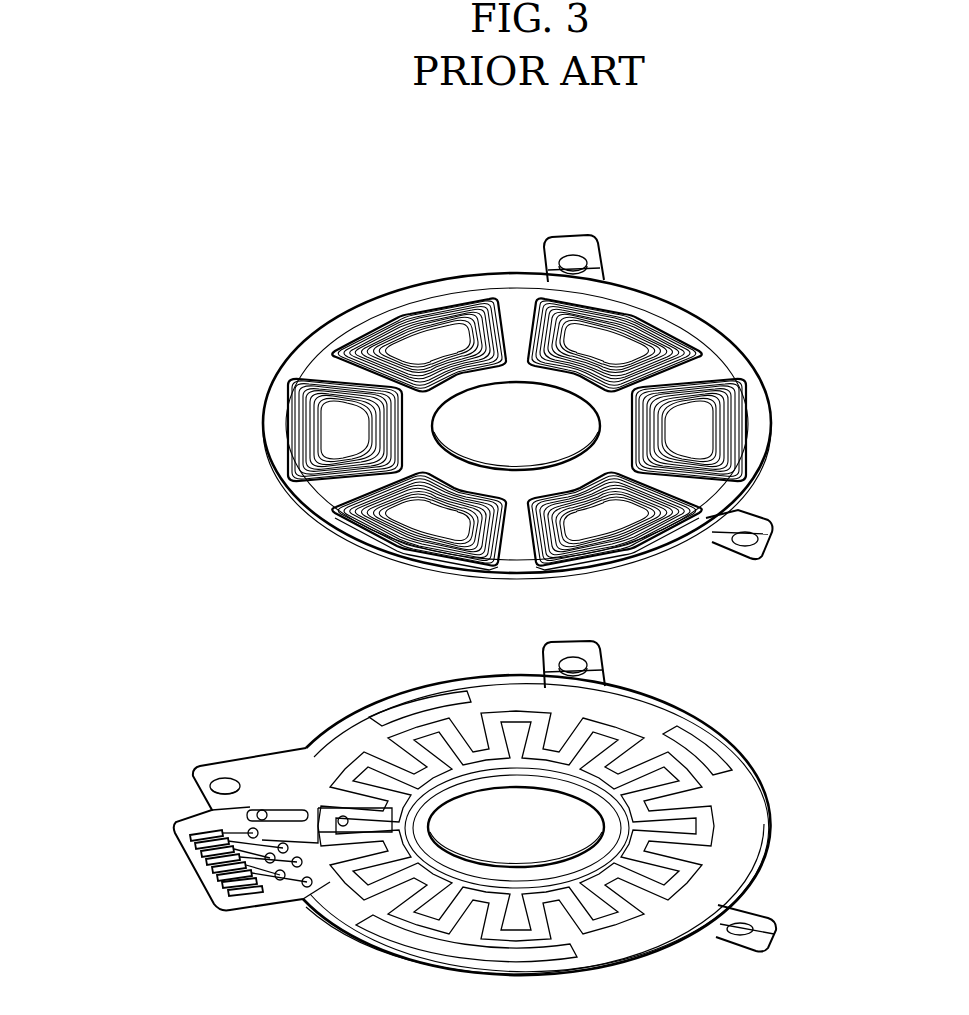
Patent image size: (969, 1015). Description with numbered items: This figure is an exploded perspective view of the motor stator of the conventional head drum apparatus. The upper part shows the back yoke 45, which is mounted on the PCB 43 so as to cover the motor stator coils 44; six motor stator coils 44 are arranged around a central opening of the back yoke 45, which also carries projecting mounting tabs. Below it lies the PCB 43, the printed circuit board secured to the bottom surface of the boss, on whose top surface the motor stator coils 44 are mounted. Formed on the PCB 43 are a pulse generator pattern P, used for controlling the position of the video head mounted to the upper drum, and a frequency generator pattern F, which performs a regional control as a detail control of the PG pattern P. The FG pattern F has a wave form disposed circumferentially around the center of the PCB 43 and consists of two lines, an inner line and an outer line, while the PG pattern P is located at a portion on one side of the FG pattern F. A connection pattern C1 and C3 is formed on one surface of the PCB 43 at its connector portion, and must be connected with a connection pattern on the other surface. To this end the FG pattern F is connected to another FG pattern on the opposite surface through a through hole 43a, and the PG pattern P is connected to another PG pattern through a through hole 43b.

The back yoke 45 is at (708, 338).
The motor stator coils 44 is at (733, 457).
The PCB 43 is at (735, 862).
The through hole 43a is at (262, 813).
The through hole 43b is at (342, 820).
The pulse generator (PG) pattern P is at (212, 812).
The connection pattern C1 is at (180, 842).
The connection pattern C3 is at (195, 858).
The frequency generator (FG) pattern F is at (342, 890).